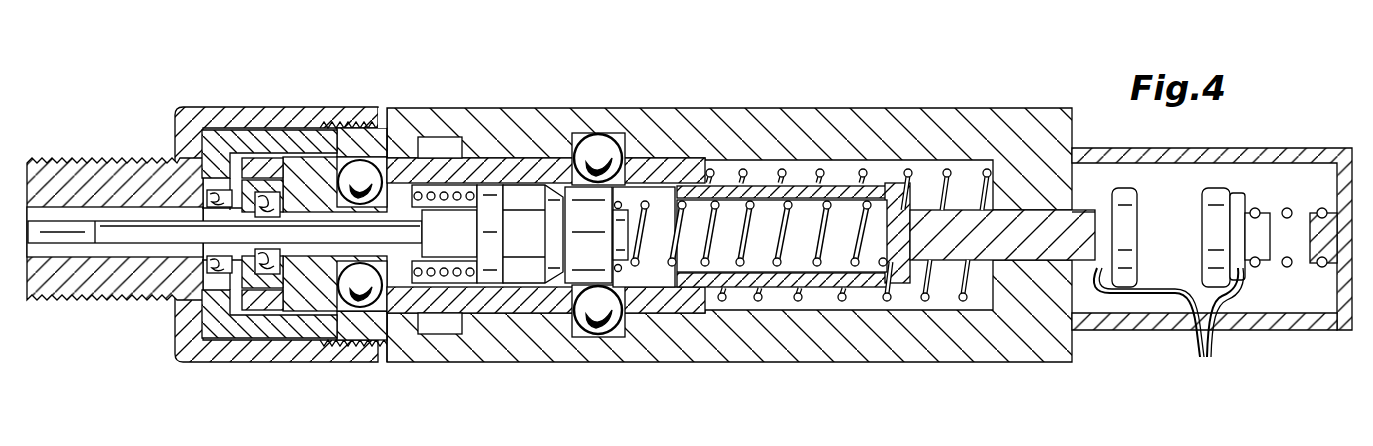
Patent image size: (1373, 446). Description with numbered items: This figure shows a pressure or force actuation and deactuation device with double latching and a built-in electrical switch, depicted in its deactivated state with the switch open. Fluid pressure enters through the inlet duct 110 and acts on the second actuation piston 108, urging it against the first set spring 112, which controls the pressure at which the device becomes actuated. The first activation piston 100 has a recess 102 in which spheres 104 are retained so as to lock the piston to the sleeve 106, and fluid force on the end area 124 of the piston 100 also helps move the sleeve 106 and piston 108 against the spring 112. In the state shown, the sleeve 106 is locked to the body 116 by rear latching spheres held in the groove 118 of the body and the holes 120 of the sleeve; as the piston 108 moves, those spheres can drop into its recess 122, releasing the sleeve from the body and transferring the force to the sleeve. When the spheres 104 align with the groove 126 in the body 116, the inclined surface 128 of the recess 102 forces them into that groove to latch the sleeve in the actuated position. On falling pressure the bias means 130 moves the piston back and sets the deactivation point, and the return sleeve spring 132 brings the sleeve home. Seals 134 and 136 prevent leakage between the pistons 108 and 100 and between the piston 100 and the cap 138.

The first activation piston 100 is at (293, 197).
The recess 102 is at (358, 168).
The spheres 104 is at (380, 138).
The sleeve 106 is at (510, 170).
The second actuation piston 108 is at (456, 243).
The inlet duct 110 is at (30, 257).
The first set spring 112 is at (787, 265).
The body 116 is at (752, 132).
The groove 118 is at (607, 157).
The holes 120 is at (630, 175).
The recess 122 is at (528, 203).
The area 124 is at (32, 213).
The groove 126 is at (437, 323).
The inclined surface 128 is at (330, 278).
The bias means 130 is at (450, 187).
The return sleeve spring 132 is at (867, 175).
The seal 134 is at (263, 267).
The seal 136 is at (207, 263).
The cap 138 is at (187, 103).